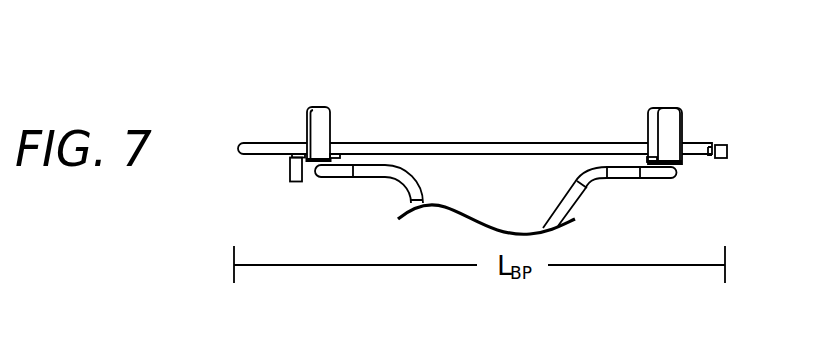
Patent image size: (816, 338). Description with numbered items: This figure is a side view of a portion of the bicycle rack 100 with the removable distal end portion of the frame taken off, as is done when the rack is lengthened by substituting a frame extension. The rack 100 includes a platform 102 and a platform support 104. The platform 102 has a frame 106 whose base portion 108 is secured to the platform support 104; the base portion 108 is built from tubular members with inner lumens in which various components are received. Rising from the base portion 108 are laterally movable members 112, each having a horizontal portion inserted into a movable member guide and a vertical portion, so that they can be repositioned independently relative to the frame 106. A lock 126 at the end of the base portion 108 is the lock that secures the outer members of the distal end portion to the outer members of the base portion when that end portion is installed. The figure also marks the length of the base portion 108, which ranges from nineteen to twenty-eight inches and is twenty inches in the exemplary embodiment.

The rack 100 is at (238, 63).
The platform 102 is at (396, 99).
The platform support 104 is at (379, 189).
The frame 106 is at (465, 134).
The base portion 108 is at (237, 145).
The laterally movable member 112 is at (668, 107).
The lock 126 is at (717, 143).